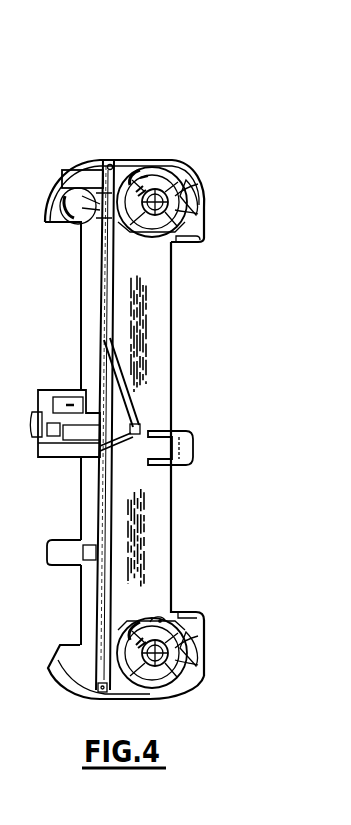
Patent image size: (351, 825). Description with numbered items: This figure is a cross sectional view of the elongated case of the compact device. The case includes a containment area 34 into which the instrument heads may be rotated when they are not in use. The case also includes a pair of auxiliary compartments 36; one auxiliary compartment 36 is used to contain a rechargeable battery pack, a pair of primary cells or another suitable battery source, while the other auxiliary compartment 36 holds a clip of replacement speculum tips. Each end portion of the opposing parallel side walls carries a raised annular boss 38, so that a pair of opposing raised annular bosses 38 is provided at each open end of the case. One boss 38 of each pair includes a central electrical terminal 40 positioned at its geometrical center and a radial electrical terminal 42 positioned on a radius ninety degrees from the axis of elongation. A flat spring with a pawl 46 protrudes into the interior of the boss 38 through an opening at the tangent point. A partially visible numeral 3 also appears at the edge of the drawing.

The frame housing 36 is at (73, 330).
The housing end cap 38 is at (176, 242).
The pulley wheel 40 is at (138, 232).
The blade 42 is at (196, 184).
The hatched support region 34 is at (148, 360).
The bracket 46 is at (162, 620).
The drive bracket assembly 3 is at (32, 425).